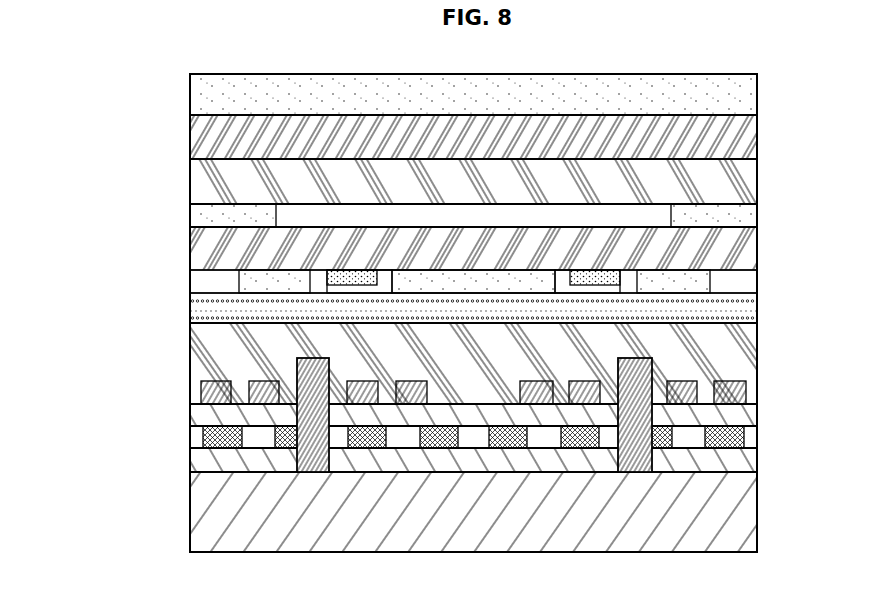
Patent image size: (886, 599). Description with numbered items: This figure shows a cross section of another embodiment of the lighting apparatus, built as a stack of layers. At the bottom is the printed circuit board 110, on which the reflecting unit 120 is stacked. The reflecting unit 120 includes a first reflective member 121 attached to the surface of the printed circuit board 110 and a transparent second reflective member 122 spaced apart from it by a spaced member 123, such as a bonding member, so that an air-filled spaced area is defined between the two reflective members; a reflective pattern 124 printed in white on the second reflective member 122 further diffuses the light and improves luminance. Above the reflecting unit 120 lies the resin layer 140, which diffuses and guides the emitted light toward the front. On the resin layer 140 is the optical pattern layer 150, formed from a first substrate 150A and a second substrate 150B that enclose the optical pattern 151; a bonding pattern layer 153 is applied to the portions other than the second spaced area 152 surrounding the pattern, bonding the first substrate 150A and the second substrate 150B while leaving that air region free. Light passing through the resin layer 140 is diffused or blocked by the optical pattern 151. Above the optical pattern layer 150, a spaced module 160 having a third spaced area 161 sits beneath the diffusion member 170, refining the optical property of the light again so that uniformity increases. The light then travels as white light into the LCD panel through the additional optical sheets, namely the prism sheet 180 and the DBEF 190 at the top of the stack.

The printed circuit board 110 is at (760, 518).
The reflecting unit 120 is at (519, 431).
The first reflective member 121 is at (760, 466).
The second reflective member 122 is at (760, 430).
The spaced member 123 is at (760, 444).
The reflective pattern 124 is at (760, 392).
The resin layer 140 is at (760, 362).
The optical pattern layer 150 is at (456, 276).
The first substrate 150A is at (472, 248).
The second substrate 150B is at (472, 309).
The optical pattern 151 is at (760, 312).
The second spaced area 152 is at (760, 287).
The bonding pattern layer 153 is at (760, 262).
The spaced module 160 is at (762, 222).
The third spaced area 161 is at (760, 203).
The diffusion member 170 is at (760, 168).
The prism sheet 180 is at (760, 130).
The DBEF 190 is at (760, 85).